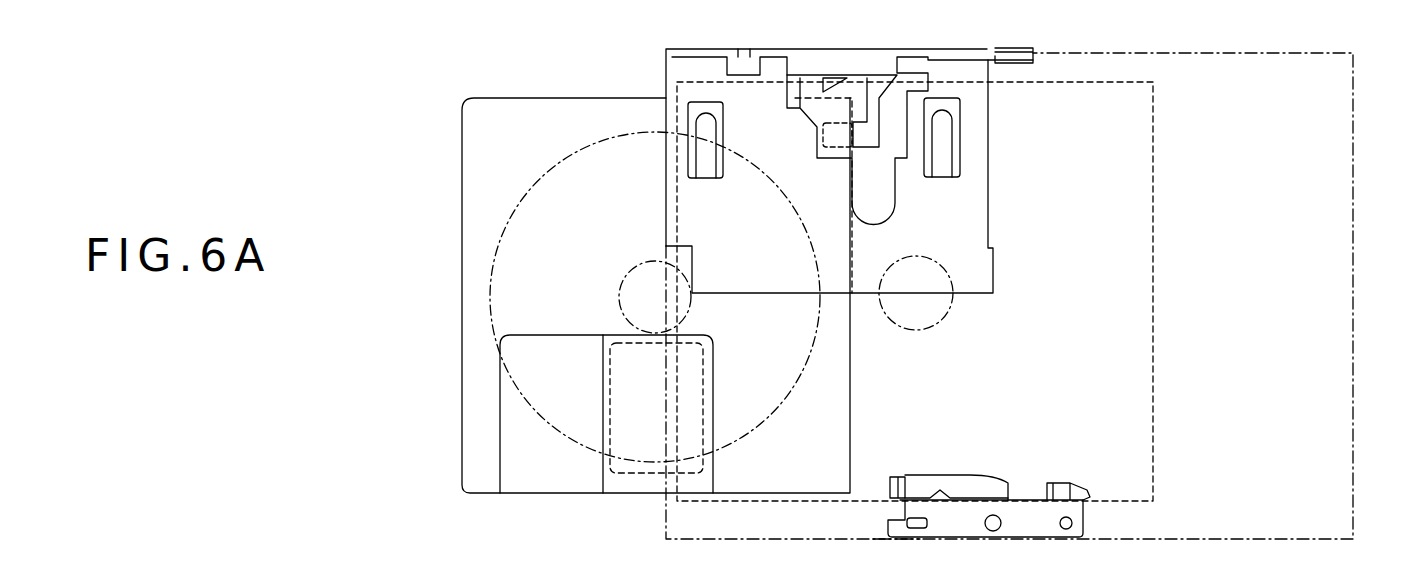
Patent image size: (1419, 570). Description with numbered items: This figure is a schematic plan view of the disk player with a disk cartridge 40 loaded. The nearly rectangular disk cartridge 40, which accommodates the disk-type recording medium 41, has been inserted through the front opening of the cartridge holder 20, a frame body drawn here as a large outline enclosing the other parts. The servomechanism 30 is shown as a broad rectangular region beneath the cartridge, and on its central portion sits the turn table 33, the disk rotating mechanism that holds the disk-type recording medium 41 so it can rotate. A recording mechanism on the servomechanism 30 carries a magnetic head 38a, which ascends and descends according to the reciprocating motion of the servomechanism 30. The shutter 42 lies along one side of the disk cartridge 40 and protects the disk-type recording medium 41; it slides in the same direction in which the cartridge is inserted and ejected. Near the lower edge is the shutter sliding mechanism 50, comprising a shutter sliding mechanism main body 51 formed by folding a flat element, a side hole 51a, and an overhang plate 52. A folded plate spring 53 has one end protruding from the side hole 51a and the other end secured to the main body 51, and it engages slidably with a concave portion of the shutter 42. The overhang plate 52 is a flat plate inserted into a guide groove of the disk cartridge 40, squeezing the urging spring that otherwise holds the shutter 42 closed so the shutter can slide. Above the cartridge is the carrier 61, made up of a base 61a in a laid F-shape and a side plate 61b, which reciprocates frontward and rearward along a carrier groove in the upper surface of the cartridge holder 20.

The cartridge holder 20 is at (1355, 256).
The servomechanism 30 is at (1154, 245).
The turn table 33 is at (950, 310).
The magnetic head 38a is at (896, 554).
The disk cartridge 40 is at (482, 178).
The disk-type recording medium 41 is at (500, 256).
The shutter 42 is at (627, 487).
The shutter sliding mechanism 50 is at (981, 445).
The shutter sliding mechanism main body 51 is at (1018, 485).
The side hole 51a is at (941, 522).
The overhang plate 52 is at (1058, 483).
The folded plate spring 53 is at (942, 485).
The carrier 61 is at (514, 88).
The base 61a is at (970, 188).
The side plate 61b is at (832, 49).